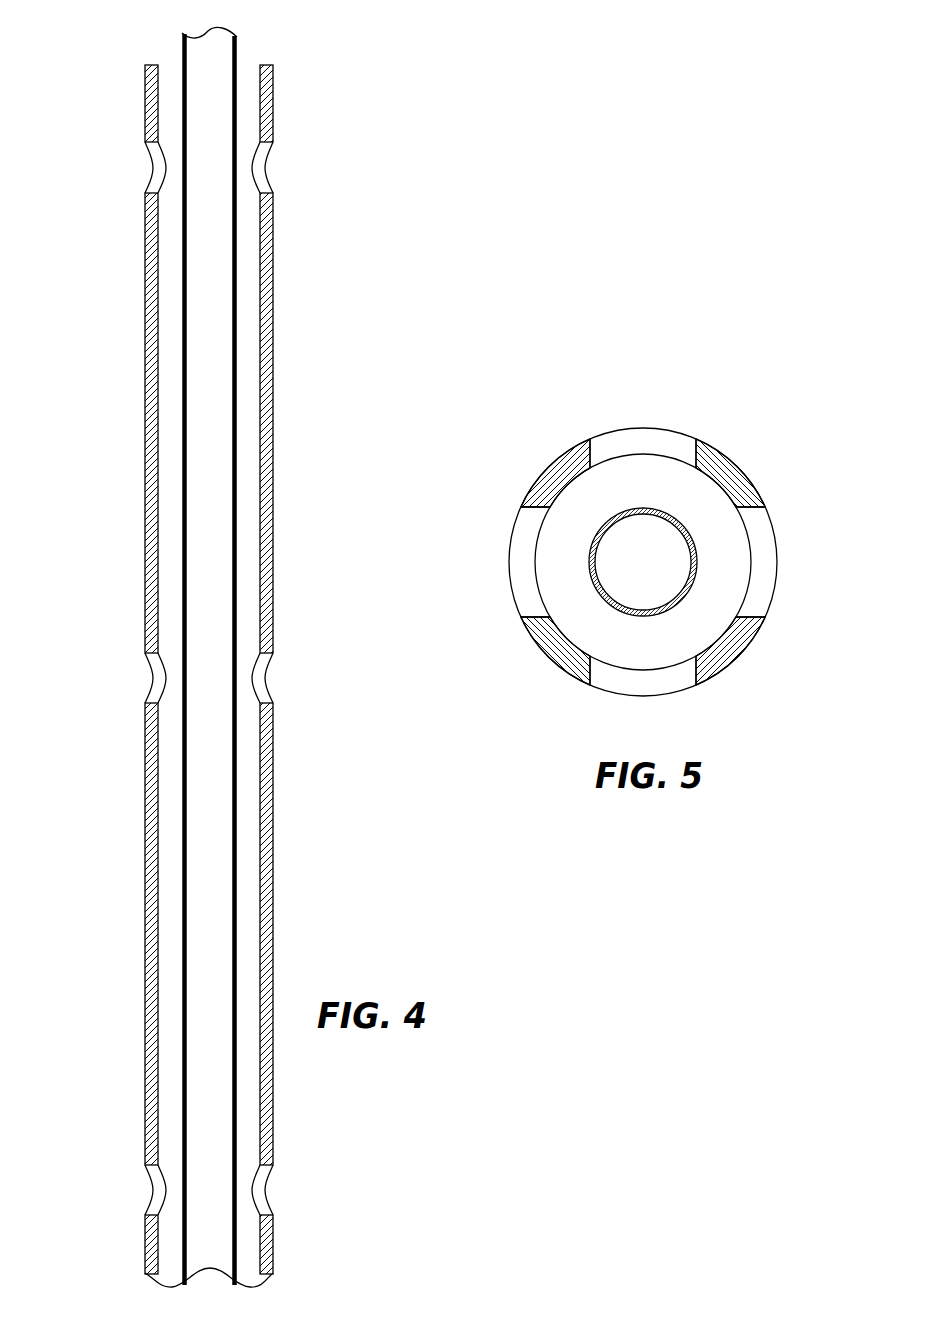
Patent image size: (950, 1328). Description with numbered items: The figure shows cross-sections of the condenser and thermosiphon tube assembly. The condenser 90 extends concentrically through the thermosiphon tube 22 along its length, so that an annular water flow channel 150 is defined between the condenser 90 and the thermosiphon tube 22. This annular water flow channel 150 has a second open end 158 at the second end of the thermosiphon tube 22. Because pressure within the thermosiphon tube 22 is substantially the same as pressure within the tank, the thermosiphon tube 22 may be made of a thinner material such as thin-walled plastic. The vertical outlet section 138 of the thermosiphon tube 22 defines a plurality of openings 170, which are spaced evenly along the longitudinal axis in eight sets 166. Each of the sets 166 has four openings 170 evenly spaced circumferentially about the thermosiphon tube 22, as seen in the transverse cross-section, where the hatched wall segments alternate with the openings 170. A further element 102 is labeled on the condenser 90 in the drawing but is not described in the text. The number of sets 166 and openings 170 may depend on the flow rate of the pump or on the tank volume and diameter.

In FIG. 4, the second open end 158 is at (250, 51).
In FIG. 4, the thermosiphon tube 22 is at (274, 102).
In FIG. 5, the thermosiphon tube 22 is at (551, 466).
In FIG. 4, the vertical outlet section 138 is at (275, 352).
In FIG. 5, the vertical outlet section 138 is at (563, 452).
In FIG. 4, the annular water flow channel 150 is at (256, 423).
In FIG. 5, the annular water flow channel 150 is at (722, 493).
In FIG. 4, the set of openings 166 is at (286, 151).
In FIG. 5, the set of openings 166 is at (492, 580).
In FIG. 4, the opening 170 is at (257, 187).
In FIG. 5, the opening 170 is at (693, 450).
In FIG. 4, the condenser 90 is at (236, 293).
In FIG. 5, the condenser 90 is at (696, 580).
In FIG. 4, the inner tube wall 102 is at (237, 537).
In FIG. 5, the inner tube wall 102 is at (697, 552).